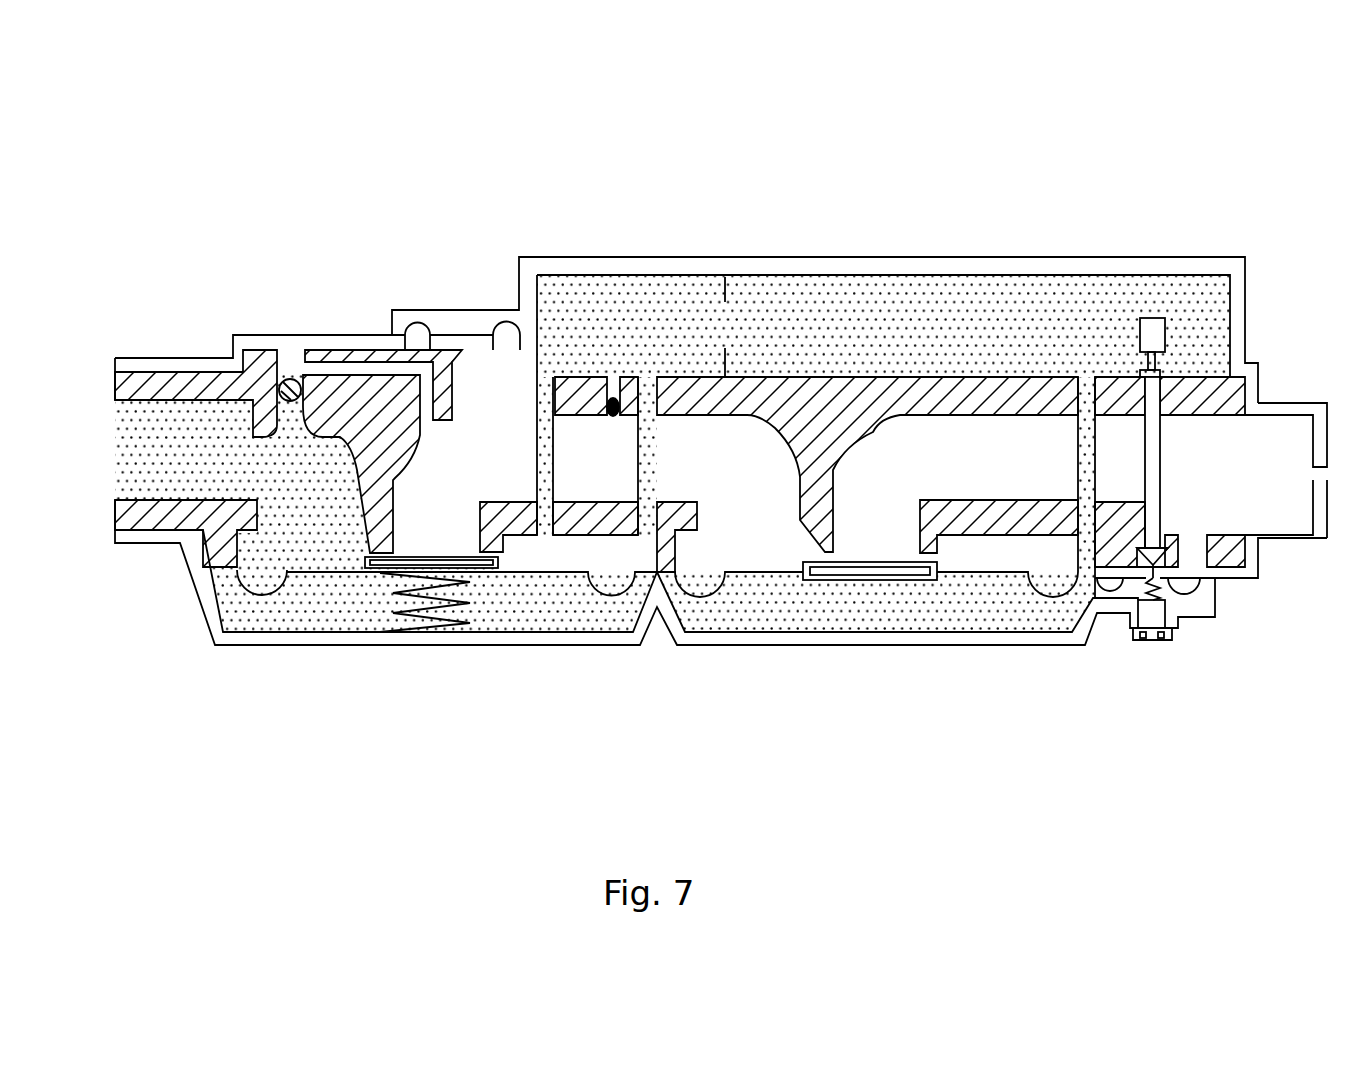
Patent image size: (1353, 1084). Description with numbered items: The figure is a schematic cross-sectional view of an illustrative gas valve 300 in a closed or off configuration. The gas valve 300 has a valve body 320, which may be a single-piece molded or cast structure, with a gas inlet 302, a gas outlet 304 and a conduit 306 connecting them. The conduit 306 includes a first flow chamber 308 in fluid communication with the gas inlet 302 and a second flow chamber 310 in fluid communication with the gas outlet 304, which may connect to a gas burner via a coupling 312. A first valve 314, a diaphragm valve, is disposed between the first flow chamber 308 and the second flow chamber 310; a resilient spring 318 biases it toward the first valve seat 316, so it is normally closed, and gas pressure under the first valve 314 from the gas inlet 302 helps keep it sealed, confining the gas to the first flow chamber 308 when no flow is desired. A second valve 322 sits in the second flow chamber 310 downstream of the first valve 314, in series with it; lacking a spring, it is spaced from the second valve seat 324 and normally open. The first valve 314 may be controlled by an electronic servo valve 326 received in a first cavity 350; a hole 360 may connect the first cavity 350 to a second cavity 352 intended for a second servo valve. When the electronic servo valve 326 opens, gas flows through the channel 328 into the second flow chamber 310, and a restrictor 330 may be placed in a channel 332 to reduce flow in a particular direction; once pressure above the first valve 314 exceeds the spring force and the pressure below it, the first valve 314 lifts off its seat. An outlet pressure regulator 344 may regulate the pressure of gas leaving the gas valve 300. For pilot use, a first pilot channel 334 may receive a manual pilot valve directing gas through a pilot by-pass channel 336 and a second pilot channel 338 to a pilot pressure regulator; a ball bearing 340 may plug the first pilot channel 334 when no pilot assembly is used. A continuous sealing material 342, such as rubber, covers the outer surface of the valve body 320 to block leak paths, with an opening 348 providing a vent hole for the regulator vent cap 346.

The gas valve 300 is at (1197, 165).
The gas inlet 302 is at (118, 478).
The gas outlet 304 is at (1275, 420).
The conduit 306 is at (605, 492).
The first flow chamber 308 is at (300, 497).
The second flow chamber 310 is at (737, 482).
The coupling 312 is at (1290, 550).
The first valve 314 is at (385, 562).
The first valve seat 316 is at (395, 555).
The resilient spring 318 is at (437, 620).
The valve body 320 is at (175, 385).
The second valve 322 is at (930, 590).
The second valve seat 324 is at (835, 558).
The electronic servo valve 326 is at (1153, 318).
The channel 328 is at (1160, 468).
The restrictor 330 is at (537, 397).
The channel 332 is at (545, 490).
The first pilot channel 334 is at (287, 415).
The pilot by-pass channel 336 is at (365, 370).
The second pilot channel 338 is at (465, 405).
The ball bearing 340 is at (290, 378).
The sealing material 342 is at (118, 362).
The outlet pressure regulator 344 is at (1200, 630).
The regulator vent cap 346 is at (1140, 635).
The opening 348 is at (1158, 650).
The first cavity 350 is at (978, 290).
The second cavity 352 is at (573, 290).
The hole 360 is at (725, 325).